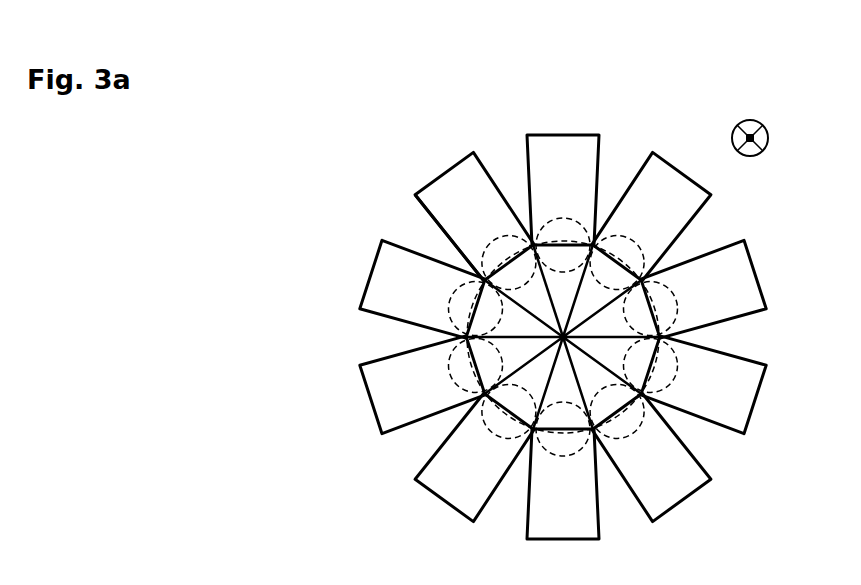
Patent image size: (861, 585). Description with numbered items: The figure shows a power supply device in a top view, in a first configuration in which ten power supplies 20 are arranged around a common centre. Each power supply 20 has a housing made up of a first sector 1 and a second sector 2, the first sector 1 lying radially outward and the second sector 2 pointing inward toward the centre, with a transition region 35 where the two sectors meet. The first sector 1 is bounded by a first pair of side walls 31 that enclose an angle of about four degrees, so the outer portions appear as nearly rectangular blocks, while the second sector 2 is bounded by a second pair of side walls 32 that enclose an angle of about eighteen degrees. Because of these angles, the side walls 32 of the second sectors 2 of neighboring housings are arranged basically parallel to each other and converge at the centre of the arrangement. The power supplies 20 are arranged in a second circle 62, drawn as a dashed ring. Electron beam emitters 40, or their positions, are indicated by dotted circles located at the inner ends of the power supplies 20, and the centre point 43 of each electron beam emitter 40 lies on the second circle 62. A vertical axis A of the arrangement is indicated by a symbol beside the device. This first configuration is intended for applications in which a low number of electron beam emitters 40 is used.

The power supply 20 is at (579, 114).
The first sector 1 is at (433, 201).
The second sector 2 is at (477, 298).
The first pair of side walls 31 is at (443, 230).
The second pair of side walls 32 is at (463, 333).
The transition region 35 is at (532, 242).
The electron beam emitter 40 is at (573, 218).
The centre point of electron exit window 43 is at (507, 258).
The second circle 62 is at (620, 418).
The vertical axis A is at (768, 138).